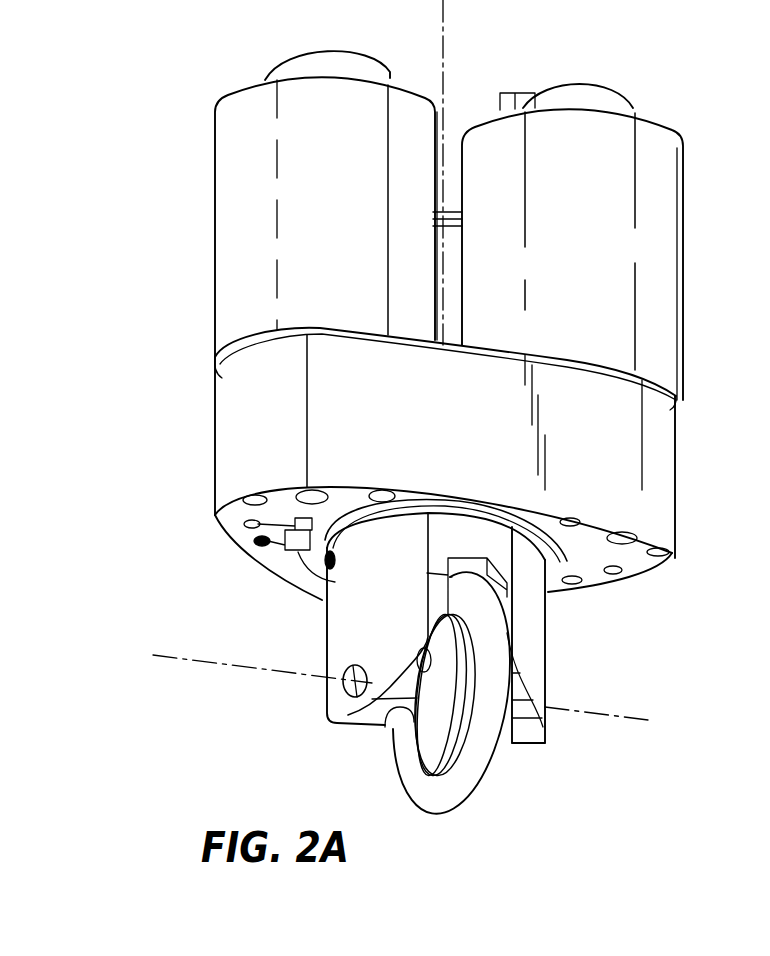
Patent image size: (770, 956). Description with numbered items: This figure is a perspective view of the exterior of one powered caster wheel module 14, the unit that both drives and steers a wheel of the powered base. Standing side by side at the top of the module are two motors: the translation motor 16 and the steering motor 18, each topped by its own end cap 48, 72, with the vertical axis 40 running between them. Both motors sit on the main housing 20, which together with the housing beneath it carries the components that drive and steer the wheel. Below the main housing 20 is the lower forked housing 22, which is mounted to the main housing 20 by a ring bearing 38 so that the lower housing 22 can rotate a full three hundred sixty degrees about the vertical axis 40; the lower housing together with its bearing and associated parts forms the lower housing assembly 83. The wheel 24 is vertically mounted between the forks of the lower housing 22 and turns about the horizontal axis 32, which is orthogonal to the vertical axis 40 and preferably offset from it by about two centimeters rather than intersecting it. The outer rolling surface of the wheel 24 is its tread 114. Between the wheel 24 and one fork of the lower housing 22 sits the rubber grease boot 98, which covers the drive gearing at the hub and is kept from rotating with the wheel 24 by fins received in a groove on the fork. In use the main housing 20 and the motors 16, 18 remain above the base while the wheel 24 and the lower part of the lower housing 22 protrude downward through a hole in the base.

The powered caster wheel module 14 is at (664, 668).
The translation motor 16 is at (672, 186).
The steering motor 18 is at (226, 146).
The main housing 20 is at (668, 441).
The lower forked housing 22 is at (537, 630).
The wheel 24 is at (486, 815).
The horizontal axis 32 is at (232, 668).
The ring bearing 38 is at (562, 558).
The vertical axis 40 is at (452, 62).
The cylinder cap 48 is at (292, 62).
The cylinder cap 72 is at (604, 97).
The lower housing assembly 83 is at (258, 601).
The rubber grease boot 98 is at (400, 742).
The tread 114 is at (482, 762).